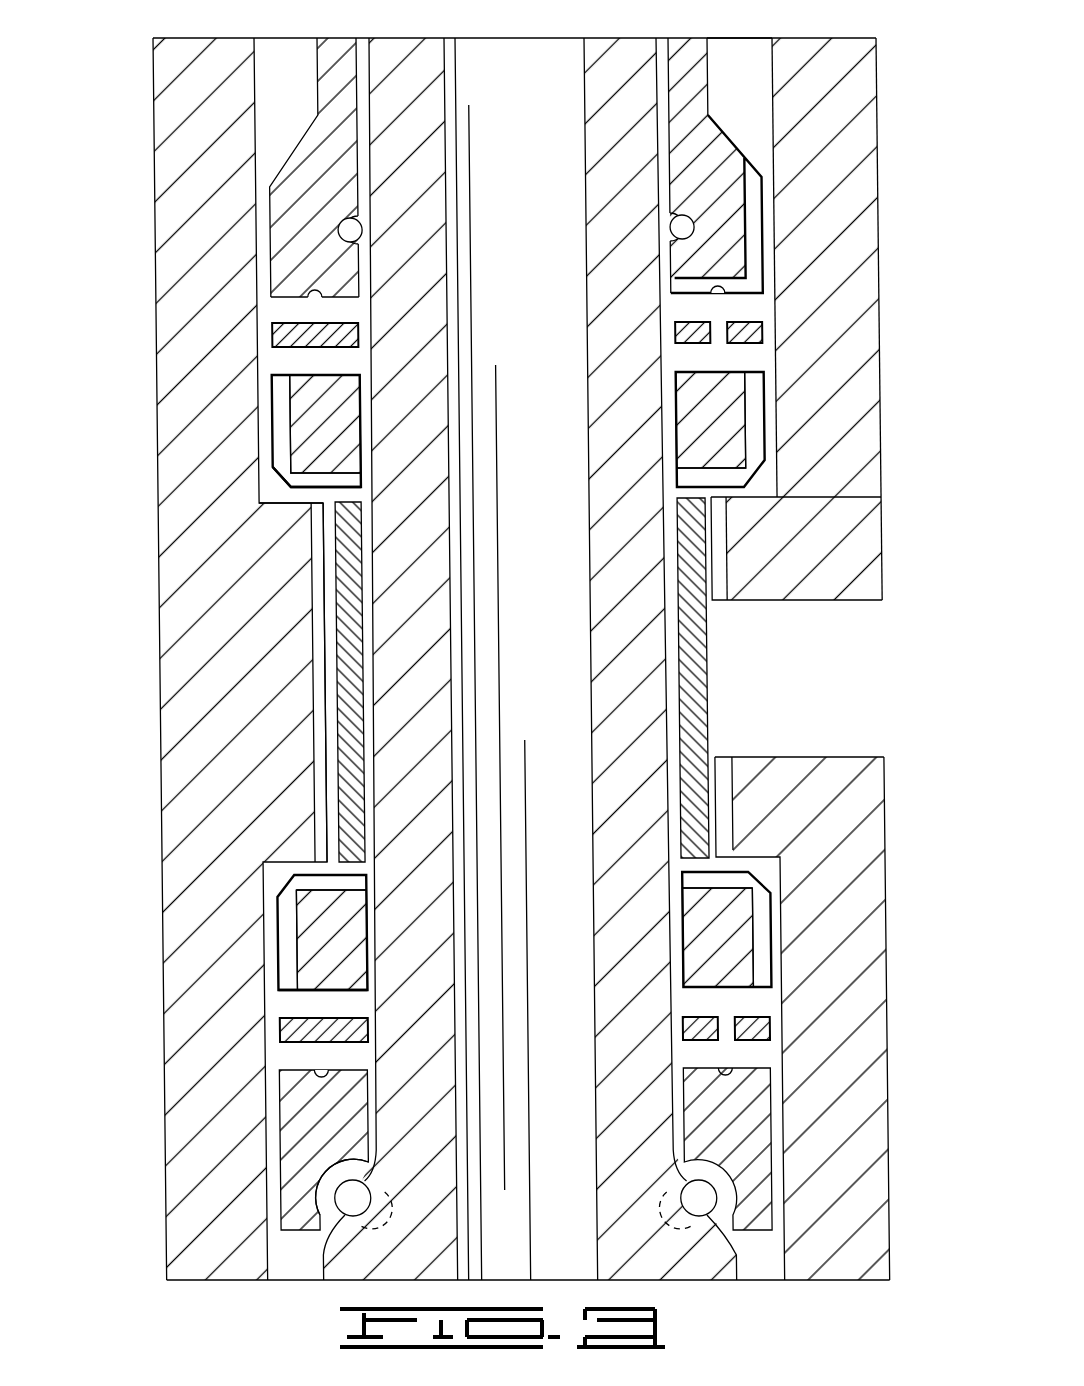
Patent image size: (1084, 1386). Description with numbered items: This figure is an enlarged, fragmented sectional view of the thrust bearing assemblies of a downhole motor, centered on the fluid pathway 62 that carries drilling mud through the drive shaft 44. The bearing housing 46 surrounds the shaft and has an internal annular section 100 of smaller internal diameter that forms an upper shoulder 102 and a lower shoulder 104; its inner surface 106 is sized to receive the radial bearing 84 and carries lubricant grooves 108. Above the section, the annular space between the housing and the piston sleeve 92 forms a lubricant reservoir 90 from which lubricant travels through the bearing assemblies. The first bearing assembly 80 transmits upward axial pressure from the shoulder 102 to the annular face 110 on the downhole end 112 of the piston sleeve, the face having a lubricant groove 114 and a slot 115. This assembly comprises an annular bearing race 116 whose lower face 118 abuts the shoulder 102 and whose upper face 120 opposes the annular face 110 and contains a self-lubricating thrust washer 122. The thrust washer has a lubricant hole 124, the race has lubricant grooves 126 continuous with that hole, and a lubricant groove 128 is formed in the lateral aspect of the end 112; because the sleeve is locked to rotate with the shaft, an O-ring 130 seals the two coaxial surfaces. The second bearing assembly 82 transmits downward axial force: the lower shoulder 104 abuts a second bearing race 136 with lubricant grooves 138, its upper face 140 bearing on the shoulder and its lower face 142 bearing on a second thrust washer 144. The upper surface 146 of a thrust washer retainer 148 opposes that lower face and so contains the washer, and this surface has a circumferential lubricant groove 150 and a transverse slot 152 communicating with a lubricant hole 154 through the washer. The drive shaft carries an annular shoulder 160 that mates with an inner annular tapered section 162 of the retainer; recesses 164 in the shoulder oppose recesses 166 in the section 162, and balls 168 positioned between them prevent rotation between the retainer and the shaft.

The drive shaft 44 is at (410, 680).
The bearing housing 46 is at (880, 265).
The fluid pathway 62 is at (537, 242).
The first bearing assembly 80 is at (768, 385).
The second bearing assembly 82 is at (778, 1030).
The radial bearing 84 is at (345, 780).
The lubricant reservoir 90 is at (740, 75).
The piston sleeve 92 is at (745, 195).
The internal annular section 100 is at (825, 530).
The upper shoulder 102 is at (722, 555).
The lower shoulder 104 is at (782, 873).
The inner surface 106 is at (322, 600).
The lubricant grooves 108 is at (315, 725).
The annular face 110 is at (306, 293).
The downhole end 112 is at (733, 256).
The lubricant groove 114 is at (330, 302).
The slot 115 is at (748, 295).
The annular bearing race 116 is at (732, 426).
The lower face 118 is at (316, 485).
The upper face 120 is at (272, 378).
The self-lubricating thrust washer 122 is at (270, 335).
The lubricant hole 124 is at (700, 335).
The lubricant grooves 126 is at (288, 440).
The lubricant groove 128 is at (748, 232).
The O-ring 130 is at (340, 222).
The second bearing race 136 is at (318, 945).
The lubricant grooves 138 is at (280, 870).
The upper face 140 is at (310, 880).
The lower face 142 is at (300, 993).
The second thrust washer 144 is at (292, 1030).
The upper surface 146 is at (330, 1075).
The thrust washer retainer 148 is at (300, 1130).
The circumferential lubricant groove 150 is at (735, 1050).
The transverse slot 152 is at (762, 1075).
The lubricant hole 154 is at (730, 1005).
The annular shoulder 160 is at (718, 1248).
The inner annular tapered section 162 is at (722, 1200).
The recesses 164 is at (685, 1225).
The recesses 166 is at (383, 1172).
The balls 168 is at (362, 1198).